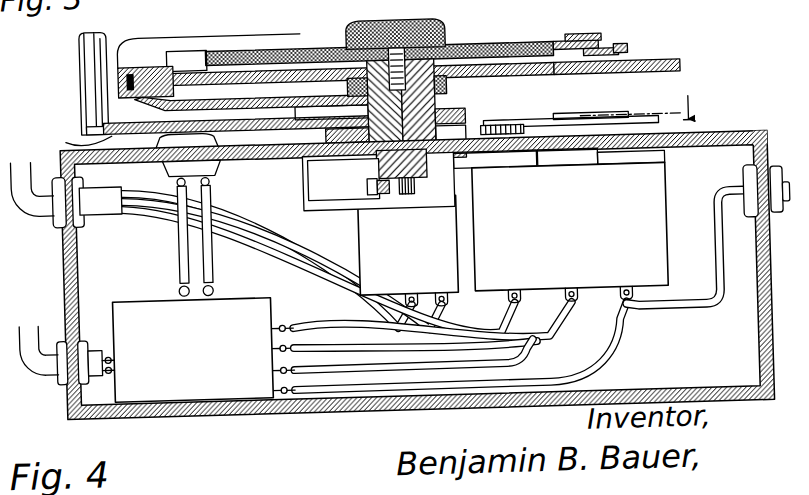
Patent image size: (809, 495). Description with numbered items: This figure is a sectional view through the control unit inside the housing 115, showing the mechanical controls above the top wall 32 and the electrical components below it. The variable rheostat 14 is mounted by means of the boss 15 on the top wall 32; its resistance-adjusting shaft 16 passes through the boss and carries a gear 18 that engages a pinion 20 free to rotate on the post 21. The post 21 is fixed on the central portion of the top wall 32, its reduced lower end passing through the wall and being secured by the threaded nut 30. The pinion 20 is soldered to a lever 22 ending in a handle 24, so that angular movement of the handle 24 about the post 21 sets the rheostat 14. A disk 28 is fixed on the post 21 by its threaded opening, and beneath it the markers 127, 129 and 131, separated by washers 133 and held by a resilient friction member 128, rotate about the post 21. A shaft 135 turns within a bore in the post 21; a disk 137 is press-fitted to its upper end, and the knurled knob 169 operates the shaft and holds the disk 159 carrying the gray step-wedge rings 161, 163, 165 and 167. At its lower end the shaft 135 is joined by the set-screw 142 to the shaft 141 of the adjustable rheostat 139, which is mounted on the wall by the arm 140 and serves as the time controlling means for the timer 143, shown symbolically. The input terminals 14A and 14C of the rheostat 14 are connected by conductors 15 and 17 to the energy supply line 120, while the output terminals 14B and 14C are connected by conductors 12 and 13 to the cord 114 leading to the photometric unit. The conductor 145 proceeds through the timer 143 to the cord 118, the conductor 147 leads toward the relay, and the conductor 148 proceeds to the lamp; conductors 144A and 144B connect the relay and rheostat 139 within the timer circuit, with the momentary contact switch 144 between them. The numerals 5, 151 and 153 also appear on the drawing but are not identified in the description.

The axis line 5 is at (490, 121).
The conductor 12 is at (245, 232).
The conductor 13 is at (253, 268).
The rheostat 14 is at (612, 216).
The input terminal 14A is at (629, 292).
The output terminal 14B is at (570, 292).
The terminal 14C is at (511, 292).
The boss / conductor 15 is at (655, 167).
The resistance-adjusting shaft 16 is at (588, 118).
The conductor 17 is at (674, 302).
The gear 18 is at (650, 123).
The pinion 20 is at (522, 128).
The post 21 is at (237, 114).
The lever 22 is at (72, 131).
The handle 24 is at (85, 50).
The disk 28 is at (686, 72).
The threaded nut 30 is at (343, 177).
The top wall 32 is at (748, 141).
The cord 114 is at (24, 194).
The housing 115 is at (63, 277).
The cord 118 is at (44, 403).
The energy supply line 120 is at (722, 204).
The marker 127 is at (149, 36).
The resilient friction member 128 is at (133, 74).
The marker 129 is at (243, 34).
The marker 131 is at (476, 48).
The washer 133 is at (311, 50).
The shaft 135 is at (370, 182).
The disk 137 is at (634, 54).
The adjustable rheostat 139 is at (420, 250).
The arm 140 is at (300, 200).
The shaft 141 is at (418, 185).
The set-screw 142 is at (368, 197).
The electronic time-delay relay / timer 143 is at (168, 329).
The momentary contact switch 144 is at (146, 182).
The conductor 144A is at (179, 259).
The conductor 144B is at (212, 186).
The conductor 145 is at (531, 346).
The conductor 147 is at (596, 373).
The conductor 148 is at (108, 373).
The terminal 151 is at (282, 321).
The terminal 153 is at (280, 362).
The disk 159 is at (608, 54).
The annular ring 161 is at (585, 39).
The annular ring 163 is at (558, 46).
The annular ring 165 is at (500, 40).
The annular ring 167 is at (340, 40).
The knurled knob 169 is at (440, 8).